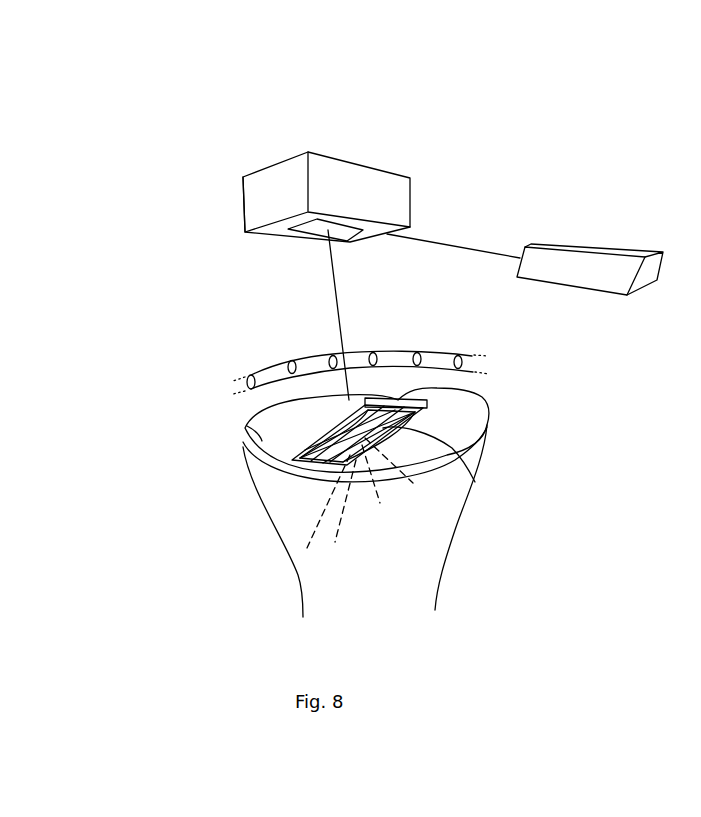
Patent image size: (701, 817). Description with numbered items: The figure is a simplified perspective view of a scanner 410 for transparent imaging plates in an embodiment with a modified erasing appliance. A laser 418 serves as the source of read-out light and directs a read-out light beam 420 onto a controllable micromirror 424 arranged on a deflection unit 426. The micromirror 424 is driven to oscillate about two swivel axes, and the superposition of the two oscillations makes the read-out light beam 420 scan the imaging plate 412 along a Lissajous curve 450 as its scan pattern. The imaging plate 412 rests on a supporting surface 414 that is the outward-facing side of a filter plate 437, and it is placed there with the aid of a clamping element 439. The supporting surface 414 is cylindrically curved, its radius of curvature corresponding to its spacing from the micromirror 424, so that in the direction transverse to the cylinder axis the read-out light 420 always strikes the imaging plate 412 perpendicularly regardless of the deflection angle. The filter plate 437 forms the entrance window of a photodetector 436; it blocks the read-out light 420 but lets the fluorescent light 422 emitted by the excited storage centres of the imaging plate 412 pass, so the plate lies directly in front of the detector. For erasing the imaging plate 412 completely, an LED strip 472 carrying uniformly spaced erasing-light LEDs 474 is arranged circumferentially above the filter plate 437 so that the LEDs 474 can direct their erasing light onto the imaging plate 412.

The scanner 410 is at (172, 161).
The imaging plate 412 is at (392, 394).
The supporting surface 414 is at (247, 426).
The laser 418 is at (590, 248).
The read-out light beam 420 is at (427, 238).
The fluorescent light 422 is at (373, 483).
The micromirror 424 is at (313, 227).
The deflection unit 426 is at (333, 173).
The photodetector 436 is at (313, 582).
The filter plate 437 is at (475, 437).
The clamping element 439 is at (384, 399).
The Lissajous curve 450 is at (413, 398).
The LED strip 472 is at (268, 372).
The erasing-light LEDs 474 is at (292, 365).